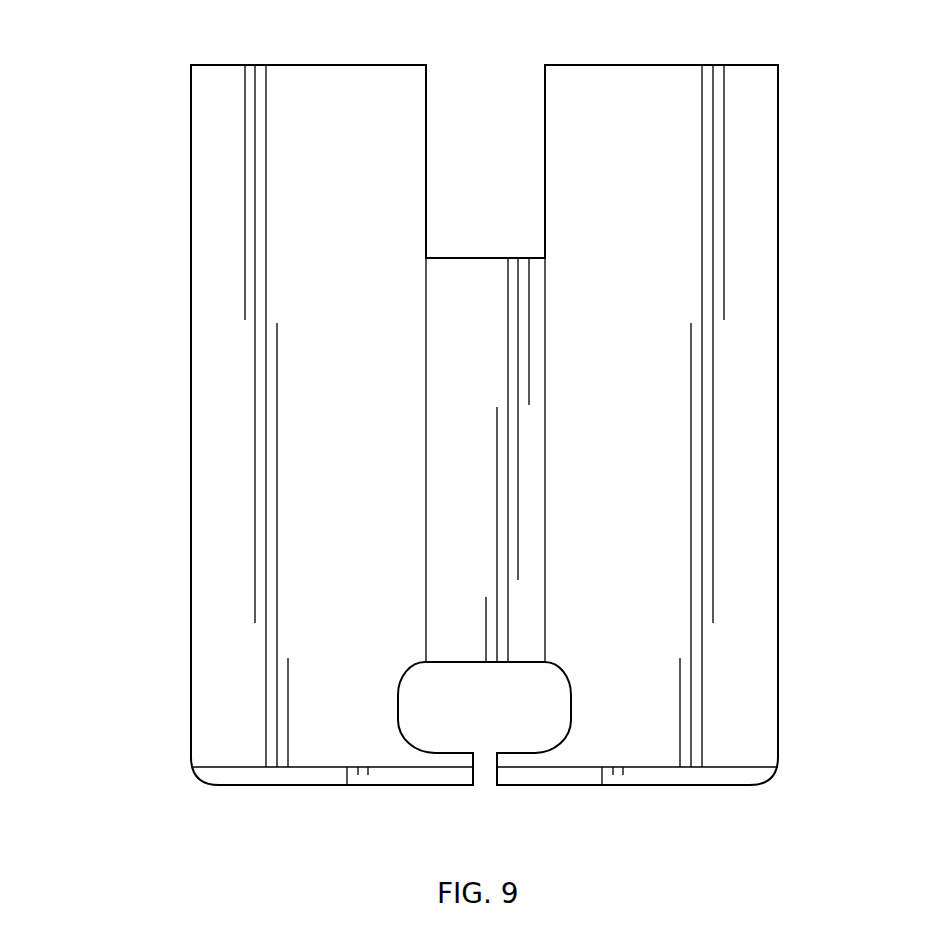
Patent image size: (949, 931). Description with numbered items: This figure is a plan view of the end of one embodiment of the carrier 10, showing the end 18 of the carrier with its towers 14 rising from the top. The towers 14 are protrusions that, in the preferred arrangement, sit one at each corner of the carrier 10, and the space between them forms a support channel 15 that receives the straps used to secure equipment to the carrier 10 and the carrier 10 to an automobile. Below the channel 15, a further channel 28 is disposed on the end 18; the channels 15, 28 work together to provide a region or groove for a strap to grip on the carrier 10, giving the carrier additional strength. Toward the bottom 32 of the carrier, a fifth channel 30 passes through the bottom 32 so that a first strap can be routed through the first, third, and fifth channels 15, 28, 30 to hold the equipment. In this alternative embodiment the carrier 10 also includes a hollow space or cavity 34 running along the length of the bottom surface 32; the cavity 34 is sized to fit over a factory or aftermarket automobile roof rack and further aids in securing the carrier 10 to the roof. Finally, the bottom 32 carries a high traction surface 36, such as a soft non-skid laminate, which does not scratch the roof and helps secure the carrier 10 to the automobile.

The carrier 10 is at (130, 128).
The towers 14 is at (296, 65).
The support channels 15 is at (460, 228).
The ends 18 is at (790, 533).
The third and fourth channels 28 is at (478, 588).
The fifth channel 30 is at (500, 715).
The bottom 32 is at (784, 787).
The hollow space or cavity 34 is at (568, 659).
The high traction surface 36 is at (577, 768).